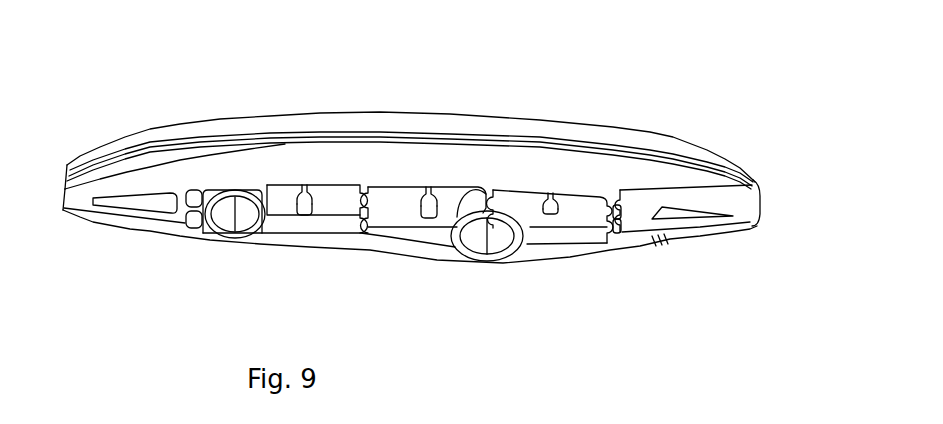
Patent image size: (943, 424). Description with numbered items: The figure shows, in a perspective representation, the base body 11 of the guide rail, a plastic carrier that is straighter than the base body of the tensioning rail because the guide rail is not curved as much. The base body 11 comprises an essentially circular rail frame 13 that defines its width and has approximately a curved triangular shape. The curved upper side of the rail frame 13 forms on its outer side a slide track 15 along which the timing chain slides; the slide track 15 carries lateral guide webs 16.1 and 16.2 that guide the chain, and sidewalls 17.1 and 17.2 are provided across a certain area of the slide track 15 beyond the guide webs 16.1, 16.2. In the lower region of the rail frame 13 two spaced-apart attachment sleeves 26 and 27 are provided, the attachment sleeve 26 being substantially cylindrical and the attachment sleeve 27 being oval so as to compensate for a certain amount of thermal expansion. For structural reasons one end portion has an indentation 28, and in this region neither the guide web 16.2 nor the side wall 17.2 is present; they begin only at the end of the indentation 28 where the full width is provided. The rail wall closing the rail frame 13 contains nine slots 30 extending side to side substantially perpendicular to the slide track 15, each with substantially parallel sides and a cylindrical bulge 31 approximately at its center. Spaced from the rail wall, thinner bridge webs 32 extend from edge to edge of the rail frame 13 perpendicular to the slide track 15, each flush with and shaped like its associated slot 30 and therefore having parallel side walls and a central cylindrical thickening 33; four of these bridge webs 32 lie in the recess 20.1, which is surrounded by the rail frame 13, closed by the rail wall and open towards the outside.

The base body 11 is at (439, 127).
The rail frame 13 is at (342, 250).
The slide track 15 is at (748, 169).
The guide web 16.1 is at (728, 180).
The guide web 16.2 is at (670, 136).
The sidewall 17.1 is at (502, 128).
The sidewall 17.2 is at (579, 130).
The recess 20.1 is at (400, 210).
The attachment sleeve 26 is at (236, 222).
The attachment sleeve 27 is at (489, 250).
The indentation 28 is at (737, 237).
The slot 30 is at (410, 189).
The cylindrical bulge 31 is at (311, 184).
The bridge web 32 is at (350, 199).
The cylindrical thickening 33 is at (386, 187).